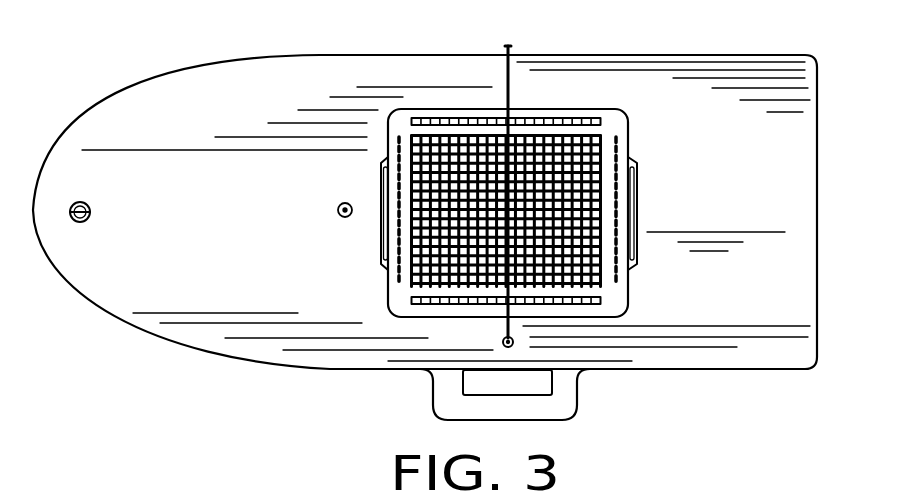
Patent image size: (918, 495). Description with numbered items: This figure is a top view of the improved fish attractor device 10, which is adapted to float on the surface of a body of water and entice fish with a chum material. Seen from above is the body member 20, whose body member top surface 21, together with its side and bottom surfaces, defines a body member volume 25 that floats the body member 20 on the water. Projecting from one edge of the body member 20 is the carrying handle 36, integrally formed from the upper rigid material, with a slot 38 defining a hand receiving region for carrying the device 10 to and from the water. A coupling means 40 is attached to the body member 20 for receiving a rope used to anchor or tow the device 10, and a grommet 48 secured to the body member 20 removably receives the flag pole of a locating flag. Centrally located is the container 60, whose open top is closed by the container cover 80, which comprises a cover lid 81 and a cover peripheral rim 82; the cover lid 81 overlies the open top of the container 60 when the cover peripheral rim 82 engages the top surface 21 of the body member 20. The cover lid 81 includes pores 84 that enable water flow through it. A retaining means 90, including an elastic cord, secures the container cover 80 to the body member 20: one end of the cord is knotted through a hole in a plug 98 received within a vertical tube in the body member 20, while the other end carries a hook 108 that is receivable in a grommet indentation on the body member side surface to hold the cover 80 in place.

The fish attractor device 10 is at (426, 184).
The body member 20 is at (232, 85).
The body member top surface 21 is at (132, 298).
The body member volume 25 is at (758, 87).
The carrying handle 36 is at (467, 404).
The slot 38 is at (537, 383).
The coupling means 40 is at (88, 215).
The grommet 48 is at (342, 205).
The container 60 is at (616, 155).
The container cover 80 is at (626, 118).
The cover lid 81 is at (597, 193).
The cover peripheral rim 82 is at (630, 296).
The pores 84 is at (410, 268).
The retaining means 90 is at (528, 97).
The plug 98 is at (502, 341).
The hook 108 is at (506, 68).